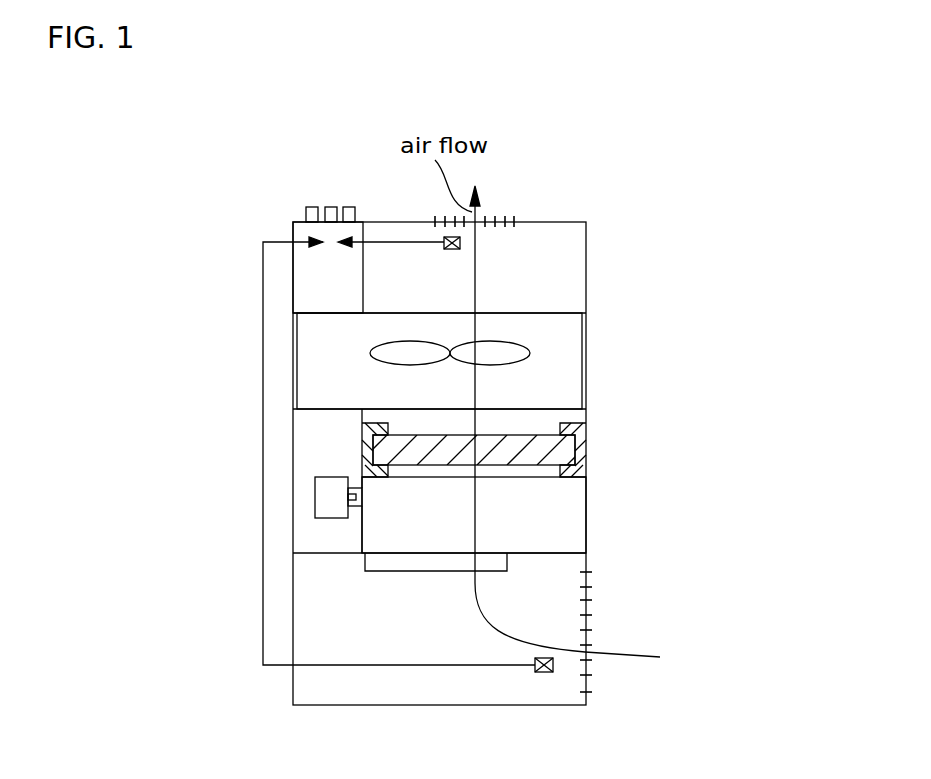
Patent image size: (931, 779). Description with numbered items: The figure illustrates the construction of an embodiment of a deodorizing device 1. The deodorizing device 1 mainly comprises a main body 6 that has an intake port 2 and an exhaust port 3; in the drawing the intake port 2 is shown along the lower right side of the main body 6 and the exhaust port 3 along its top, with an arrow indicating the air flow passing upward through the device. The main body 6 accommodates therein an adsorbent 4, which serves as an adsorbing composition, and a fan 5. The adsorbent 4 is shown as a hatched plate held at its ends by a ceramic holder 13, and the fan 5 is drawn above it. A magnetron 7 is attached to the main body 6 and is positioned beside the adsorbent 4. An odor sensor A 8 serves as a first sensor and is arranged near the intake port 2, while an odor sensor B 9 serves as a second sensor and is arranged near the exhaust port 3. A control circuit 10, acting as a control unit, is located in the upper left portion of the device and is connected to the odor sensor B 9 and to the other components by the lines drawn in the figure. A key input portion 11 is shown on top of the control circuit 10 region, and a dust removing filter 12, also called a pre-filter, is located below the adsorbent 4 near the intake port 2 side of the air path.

The deodorizing device 1 is at (608, 233).
The intake port 2 is at (588, 593).
The exhaust port 3 is at (490, 218).
The adsorbent 4 is at (507, 443).
The fan 5 is at (505, 347).
The main body 6 is at (587, 509).
The magnetron 7 is at (323, 499).
The odor sensor A 8 is at (553, 665).
The odor sensor B 9 is at (444, 240).
The control circuit 10 is at (317, 289).
The key input portion 11 is at (310, 210).
The dust removing filter 12 is at (397, 567).
The ceramic holder 13 is at (586, 438).